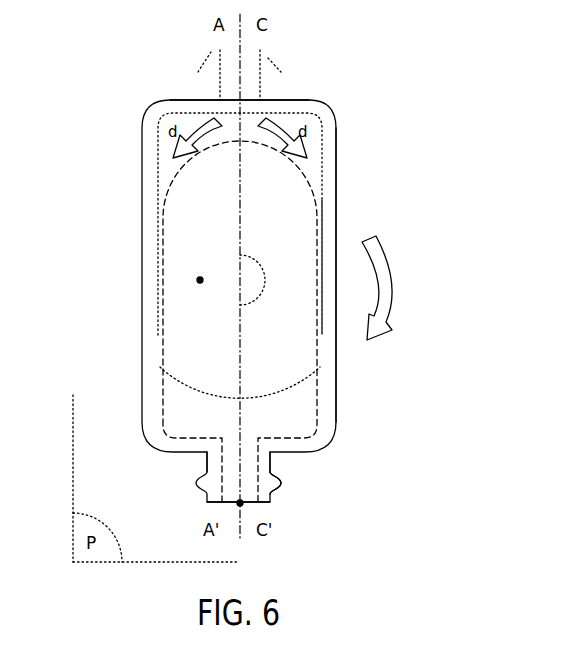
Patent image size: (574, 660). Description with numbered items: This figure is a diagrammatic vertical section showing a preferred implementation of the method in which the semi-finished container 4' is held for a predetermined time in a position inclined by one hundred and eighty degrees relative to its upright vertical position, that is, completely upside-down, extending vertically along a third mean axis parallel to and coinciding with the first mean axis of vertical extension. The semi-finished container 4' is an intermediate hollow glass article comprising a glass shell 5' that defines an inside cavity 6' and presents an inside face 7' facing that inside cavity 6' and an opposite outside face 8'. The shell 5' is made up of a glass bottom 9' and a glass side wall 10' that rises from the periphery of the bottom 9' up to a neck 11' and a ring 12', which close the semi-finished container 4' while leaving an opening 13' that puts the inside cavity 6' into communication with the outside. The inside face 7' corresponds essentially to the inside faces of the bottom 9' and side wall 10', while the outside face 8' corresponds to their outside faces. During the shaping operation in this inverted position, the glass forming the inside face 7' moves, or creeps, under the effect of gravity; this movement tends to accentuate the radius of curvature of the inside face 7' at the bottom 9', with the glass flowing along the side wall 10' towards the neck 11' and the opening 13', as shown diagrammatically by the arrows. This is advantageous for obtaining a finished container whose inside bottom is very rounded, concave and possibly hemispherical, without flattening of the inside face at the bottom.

The semi-finished container 4' is at (209, 267).
The glass shell 5' is at (368, 275).
The inside cavity 6' is at (157, 280).
The inside face 7' is at (244, 320).
The outside face 8' is at (202, 188).
The glass bottom 9' is at (248, 71).
The glass side wall 10' is at (372, 258).
The neck 11' is at (318, 467).
The ring 12' is at (326, 500).
The opening 13' is at (205, 514).